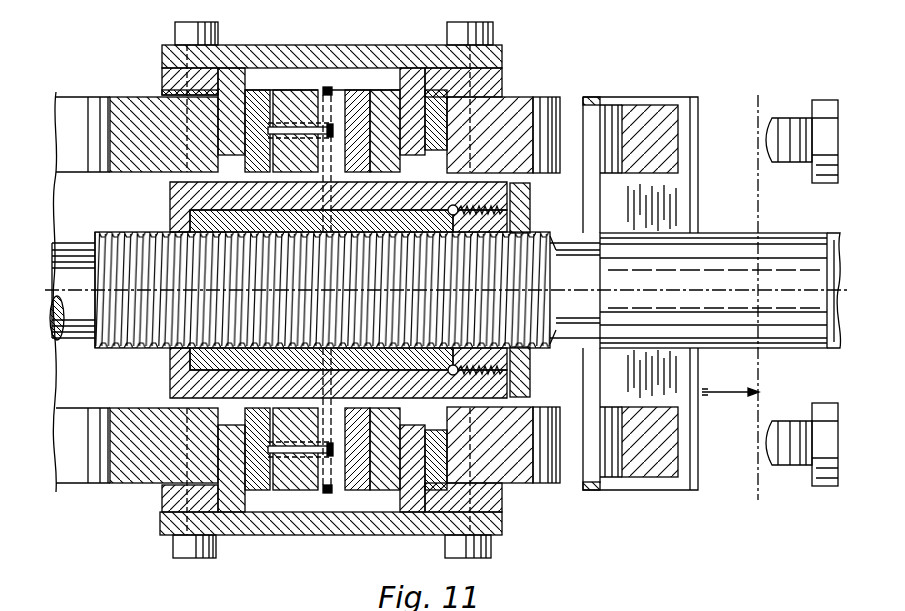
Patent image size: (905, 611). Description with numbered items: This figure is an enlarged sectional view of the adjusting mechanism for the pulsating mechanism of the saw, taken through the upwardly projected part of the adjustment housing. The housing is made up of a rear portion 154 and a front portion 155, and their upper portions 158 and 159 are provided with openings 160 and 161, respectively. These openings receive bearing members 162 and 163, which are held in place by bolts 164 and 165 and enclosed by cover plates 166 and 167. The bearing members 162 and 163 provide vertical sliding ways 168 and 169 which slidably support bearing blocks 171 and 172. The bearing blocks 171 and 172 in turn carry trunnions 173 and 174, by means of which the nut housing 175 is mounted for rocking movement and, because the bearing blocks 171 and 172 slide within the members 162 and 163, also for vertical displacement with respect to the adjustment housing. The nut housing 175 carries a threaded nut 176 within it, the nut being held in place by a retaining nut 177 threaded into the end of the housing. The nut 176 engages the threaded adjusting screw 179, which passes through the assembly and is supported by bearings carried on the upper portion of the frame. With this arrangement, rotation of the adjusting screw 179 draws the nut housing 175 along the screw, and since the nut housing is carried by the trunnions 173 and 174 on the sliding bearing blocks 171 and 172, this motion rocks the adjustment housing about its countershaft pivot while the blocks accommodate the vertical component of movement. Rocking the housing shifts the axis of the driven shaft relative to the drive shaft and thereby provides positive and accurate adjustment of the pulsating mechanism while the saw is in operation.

The rear portion 154 is at (636, 465).
The front portion 155 is at (636, 120).
The upper portion 158 is at (505, 490).
The upper portion 159 is at (507, 130).
The opening 160 is at (160, 486).
The opening 161 is at (228, 126).
The bearing member 162 is at (234, 534).
The bearing member 163 is at (246, 70).
The bolt 164 is at (175, 550).
The bolt 165 is at (176, 32).
The cover plate 166 is at (258, 532).
The cover plate 167 is at (300, 46).
The vertical sliding way 168 is at (262, 522).
The vertical sliding way 169 is at (262, 92).
The bearing block 171 is at (396, 498).
The bearing block 172 is at (344, 88).
The trunnion 173 is at (362, 483).
The trunnion 174 is at (362, 121).
The nut housing 175 is at (172, 190).
The threaded nut 176 is at (205, 221).
The retaining nut 177 is at (531, 208).
The threaded adjusting screw 179 is at (568, 330).